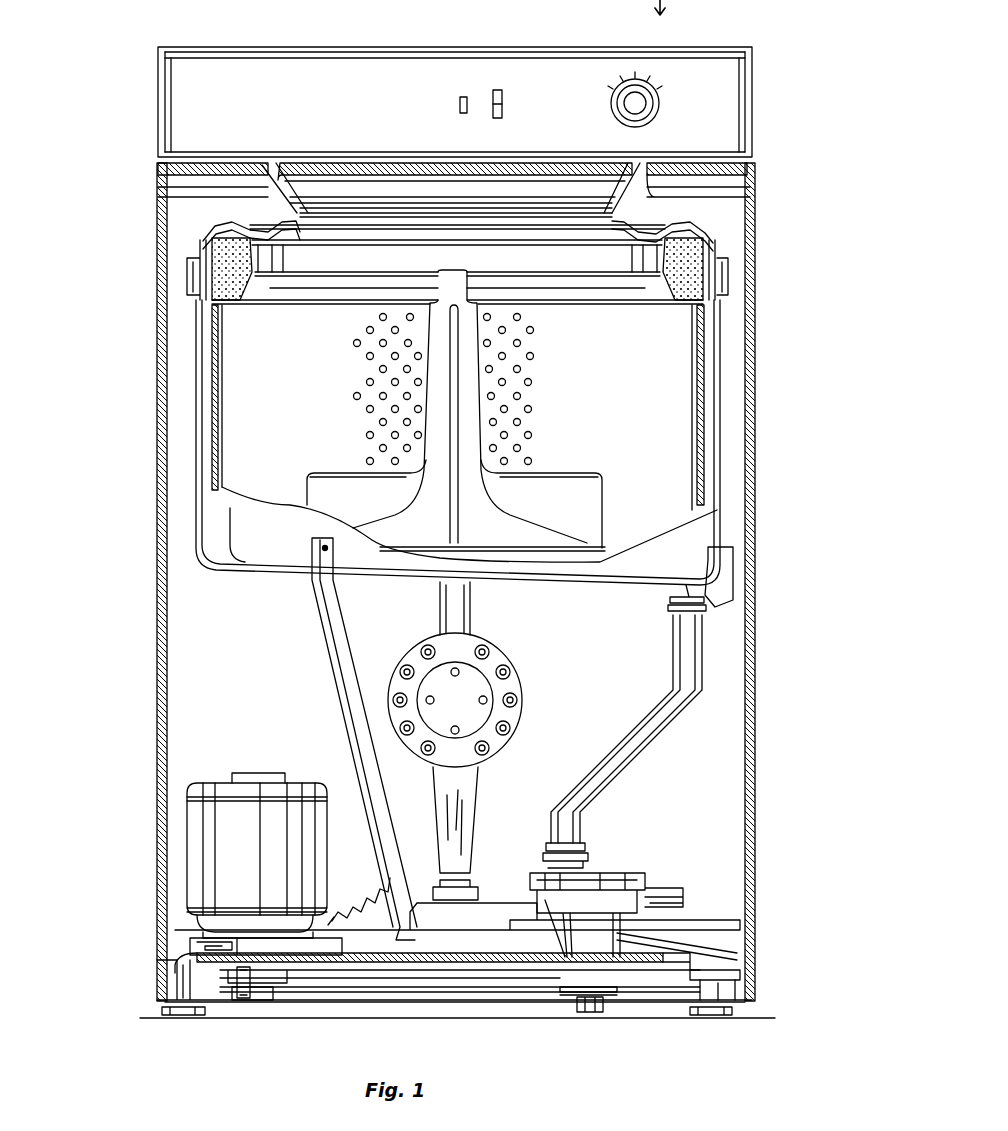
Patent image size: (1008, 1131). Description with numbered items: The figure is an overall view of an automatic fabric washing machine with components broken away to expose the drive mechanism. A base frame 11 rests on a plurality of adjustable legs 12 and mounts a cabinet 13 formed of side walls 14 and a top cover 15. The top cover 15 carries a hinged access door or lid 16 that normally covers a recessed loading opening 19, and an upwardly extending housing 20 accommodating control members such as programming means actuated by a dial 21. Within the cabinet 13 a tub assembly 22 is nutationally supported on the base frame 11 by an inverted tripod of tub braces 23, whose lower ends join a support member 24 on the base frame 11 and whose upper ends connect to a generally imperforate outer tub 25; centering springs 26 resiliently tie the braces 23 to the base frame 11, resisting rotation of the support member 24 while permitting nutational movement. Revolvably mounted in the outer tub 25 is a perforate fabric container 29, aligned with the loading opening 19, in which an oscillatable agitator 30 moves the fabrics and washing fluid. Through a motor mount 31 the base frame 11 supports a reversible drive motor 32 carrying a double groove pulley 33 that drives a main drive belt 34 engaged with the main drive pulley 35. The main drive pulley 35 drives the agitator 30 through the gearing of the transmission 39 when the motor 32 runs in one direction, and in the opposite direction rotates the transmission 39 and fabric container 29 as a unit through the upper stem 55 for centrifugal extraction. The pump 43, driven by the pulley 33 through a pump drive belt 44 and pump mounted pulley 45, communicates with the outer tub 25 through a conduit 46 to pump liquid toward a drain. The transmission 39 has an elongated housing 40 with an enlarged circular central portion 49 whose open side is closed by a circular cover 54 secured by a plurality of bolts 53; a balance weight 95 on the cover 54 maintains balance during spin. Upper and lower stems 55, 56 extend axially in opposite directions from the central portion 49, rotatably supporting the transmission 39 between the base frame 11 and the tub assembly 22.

The base frame 11 is at (660, 970).
The adjustable legs 12 is at (157, 983).
The cabinet 13 is at (121, 692).
The side walls 14 is at (157, 790).
The top cover 15 is at (757, 188).
The access door or lid 16 is at (347, 164).
The loading opening 19 is at (456, 196).
The housing 20 is at (757, 108).
The dial 21 is at (640, 100).
The tub assembly 22 is at (740, 474).
The tub braces 23 is at (318, 625).
The support member 24 is at (492, 905).
The outer liquid container or tub 25 is at (648, 568).
The centering springs 26 is at (366, 880).
The perforate clothes basket or fabric container 29 is at (700, 380).
The agitator 30 is at (562, 470).
The motor mount 31 is at (343, 948).
The drive motor 32 is at (258, 775).
The double groove pulley 33 is at (242, 998).
The main drive belt 34 is at (325, 976).
The main drive pulley 35 is at (510, 1000).
The transmission 39 is at (539, 778).
The housing 40 is at (478, 767).
The pump 43 is at (622, 873).
The pump drive belt 44 is at (545, 1000).
The pump mounted pulley 45 is at (608, 1010).
The conduit 46 is at (645, 768).
The central portion 49 is at (524, 692).
The bolts 53 is at (405, 670).
The cover 54 is at (473, 644).
The upper stem 55 is at (476, 626).
The lower stem 56 is at (473, 818).
The balance weight 95 is at (486, 715).